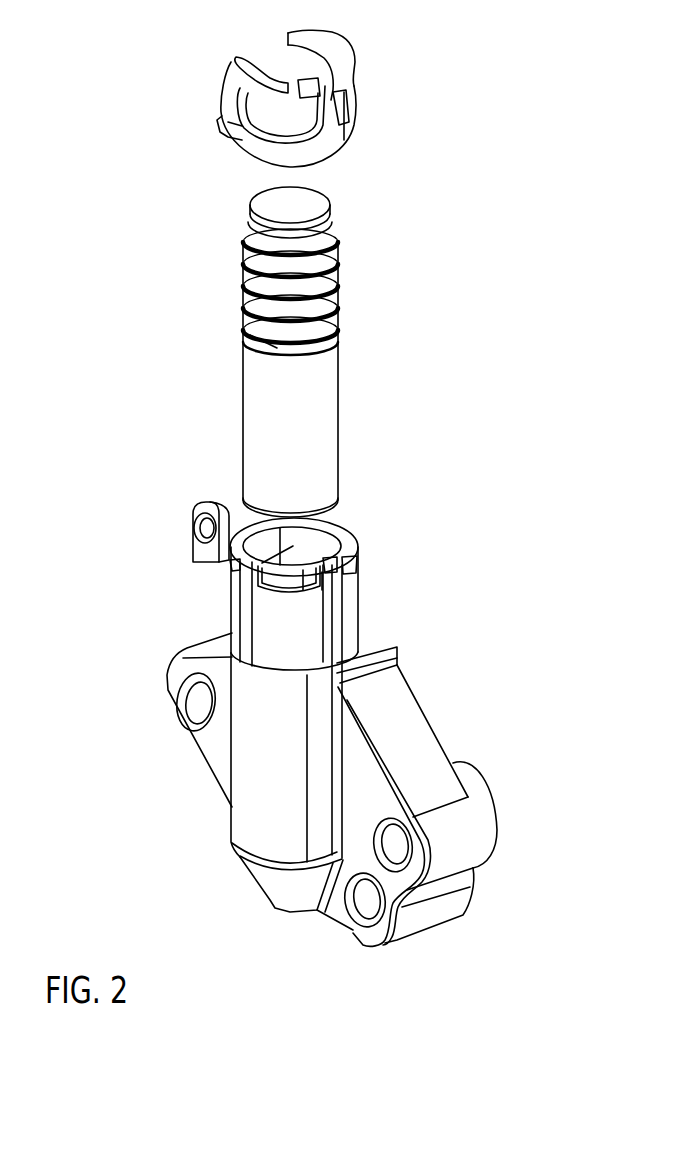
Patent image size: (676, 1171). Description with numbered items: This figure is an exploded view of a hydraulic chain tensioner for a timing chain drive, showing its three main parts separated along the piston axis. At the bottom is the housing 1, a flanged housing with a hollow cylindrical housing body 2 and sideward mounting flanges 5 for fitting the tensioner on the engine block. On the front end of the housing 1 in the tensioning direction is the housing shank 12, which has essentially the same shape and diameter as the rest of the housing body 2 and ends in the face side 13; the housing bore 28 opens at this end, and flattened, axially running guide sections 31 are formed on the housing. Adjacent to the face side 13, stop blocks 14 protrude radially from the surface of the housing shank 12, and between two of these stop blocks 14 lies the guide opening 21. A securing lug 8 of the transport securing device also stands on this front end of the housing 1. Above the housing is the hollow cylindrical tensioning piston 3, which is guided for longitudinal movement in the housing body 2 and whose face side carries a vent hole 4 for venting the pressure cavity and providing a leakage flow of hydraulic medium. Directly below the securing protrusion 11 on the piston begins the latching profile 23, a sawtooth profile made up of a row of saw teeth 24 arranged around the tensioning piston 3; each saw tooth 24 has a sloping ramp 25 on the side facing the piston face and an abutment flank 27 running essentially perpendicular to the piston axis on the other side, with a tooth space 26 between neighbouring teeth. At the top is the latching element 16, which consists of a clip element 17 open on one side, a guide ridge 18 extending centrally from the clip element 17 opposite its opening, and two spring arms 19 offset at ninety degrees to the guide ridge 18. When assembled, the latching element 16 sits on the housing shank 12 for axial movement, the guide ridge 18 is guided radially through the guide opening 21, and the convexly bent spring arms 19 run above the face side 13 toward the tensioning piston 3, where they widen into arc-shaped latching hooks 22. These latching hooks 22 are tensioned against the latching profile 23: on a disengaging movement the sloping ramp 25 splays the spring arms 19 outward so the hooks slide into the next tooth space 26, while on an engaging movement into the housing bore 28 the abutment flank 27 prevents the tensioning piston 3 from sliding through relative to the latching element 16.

The housing 1 is at (314, 712).
The housing body 2 is at (242, 808).
The tensioning piston 3 is at (284, 350).
The vent hole 4 is at (290, 207).
The mounting flange 5 is at (405, 710).
The securing lug 8 is at (200, 548).
The securing protrusion 11 is at (245, 235).
The housing shank 12 is at (312, 617).
The face side 13 is at (348, 545).
The stop block 14 is at (345, 565).
The latching element 16 is at (285, 93).
The clip element 17 is at (320, 152).
The guide ridge 18 is at (355, 102).
The spring arm 19 is at (226, 92).
The guide opening 21 is at (322, 580).
The latching hook 22 is at (232, 61).
The latching profile 23 is at (245, 250).
The saw tooth 24 is at (247, 270).
The sloping ramp 25 is at (260, 302).
The tooth space 26 is at (250, 335).
The abutment flank 27 is at (248, 355).
The housing bore 28 is at (253, 575).
The guide section 31 is at (247, 597).